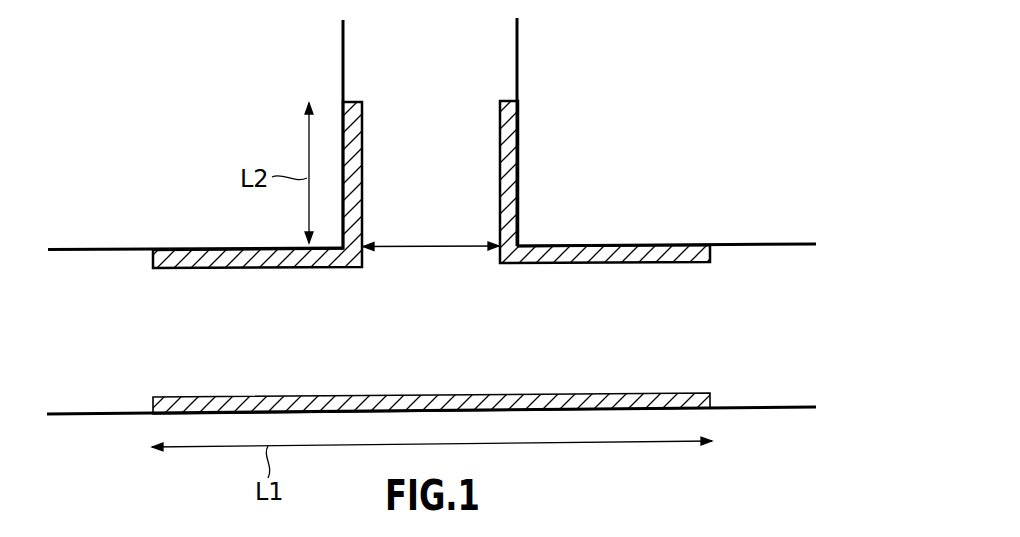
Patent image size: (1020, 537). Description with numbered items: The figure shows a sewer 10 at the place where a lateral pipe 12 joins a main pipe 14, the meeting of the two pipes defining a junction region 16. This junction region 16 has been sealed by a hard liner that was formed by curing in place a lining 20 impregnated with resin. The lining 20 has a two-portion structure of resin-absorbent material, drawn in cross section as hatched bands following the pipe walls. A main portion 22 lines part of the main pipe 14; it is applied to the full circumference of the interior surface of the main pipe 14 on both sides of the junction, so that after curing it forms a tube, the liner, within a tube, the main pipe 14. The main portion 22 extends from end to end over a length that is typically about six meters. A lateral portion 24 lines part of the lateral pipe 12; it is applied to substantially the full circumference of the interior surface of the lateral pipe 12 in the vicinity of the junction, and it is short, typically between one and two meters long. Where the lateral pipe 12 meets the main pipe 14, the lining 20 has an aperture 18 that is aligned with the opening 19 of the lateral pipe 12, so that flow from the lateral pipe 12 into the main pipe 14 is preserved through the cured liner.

The sewer 10 is at (431, 216).
The lateral pipe 12 is at (519, 49).
The main pipe 14 is at (773, 244).
The junction region 16 is at (551, 222).
The aperture 18 is at (428, 249).
The opening 19 is at (475, 273).
The lining 20 is at (498, 205).
The main portion 22 is at (197, 268).
The lateral portion 24 is at (498, 124).